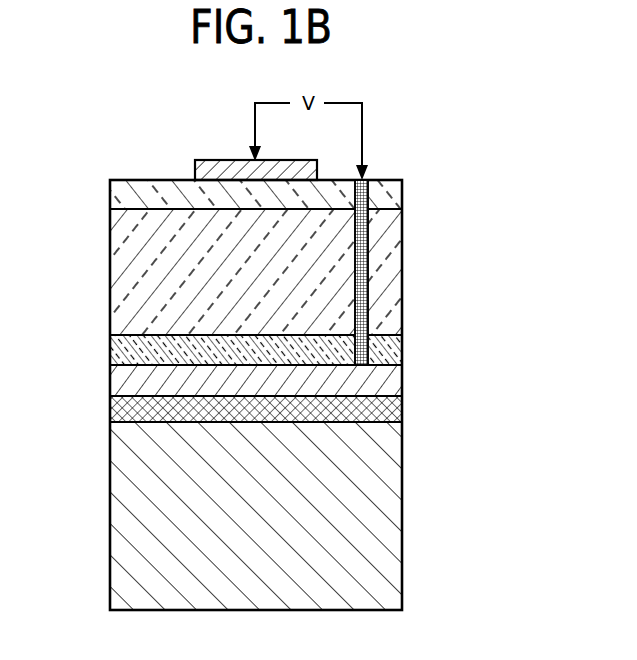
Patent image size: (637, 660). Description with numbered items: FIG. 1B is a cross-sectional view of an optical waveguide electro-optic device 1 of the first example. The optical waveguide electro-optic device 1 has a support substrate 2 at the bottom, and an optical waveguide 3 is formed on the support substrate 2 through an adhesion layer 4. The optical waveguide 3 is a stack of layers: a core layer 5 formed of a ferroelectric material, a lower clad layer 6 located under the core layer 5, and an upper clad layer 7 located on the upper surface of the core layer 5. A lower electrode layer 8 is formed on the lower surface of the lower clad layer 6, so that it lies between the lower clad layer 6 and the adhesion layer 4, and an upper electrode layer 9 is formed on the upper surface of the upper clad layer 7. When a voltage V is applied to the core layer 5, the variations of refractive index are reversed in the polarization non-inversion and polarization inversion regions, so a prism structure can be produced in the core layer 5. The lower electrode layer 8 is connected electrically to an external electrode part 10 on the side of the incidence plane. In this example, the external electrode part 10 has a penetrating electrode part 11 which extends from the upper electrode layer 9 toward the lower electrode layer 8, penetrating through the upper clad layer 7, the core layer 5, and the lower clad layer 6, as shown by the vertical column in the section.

The optical waveguide electro-optic device 1 is at (412, 96).
The support substrate 2 is at (118, 513).
The optical waveguide 3 is at (409, 180).
The adhesion layer 4 is at (116, 410).
The core layer 5 is at (116, 289).
The lower clad layer 6 is at (116, 351).
The upper clad layer 7 is at (116, 194).
The lower electrode layer 8 is at (116, 382).
The upper electrode layer 9 is at (210, 160).
The external electrode part 10 is at (366, 179).
The penetrating electrode part 11 is at (357, 269).